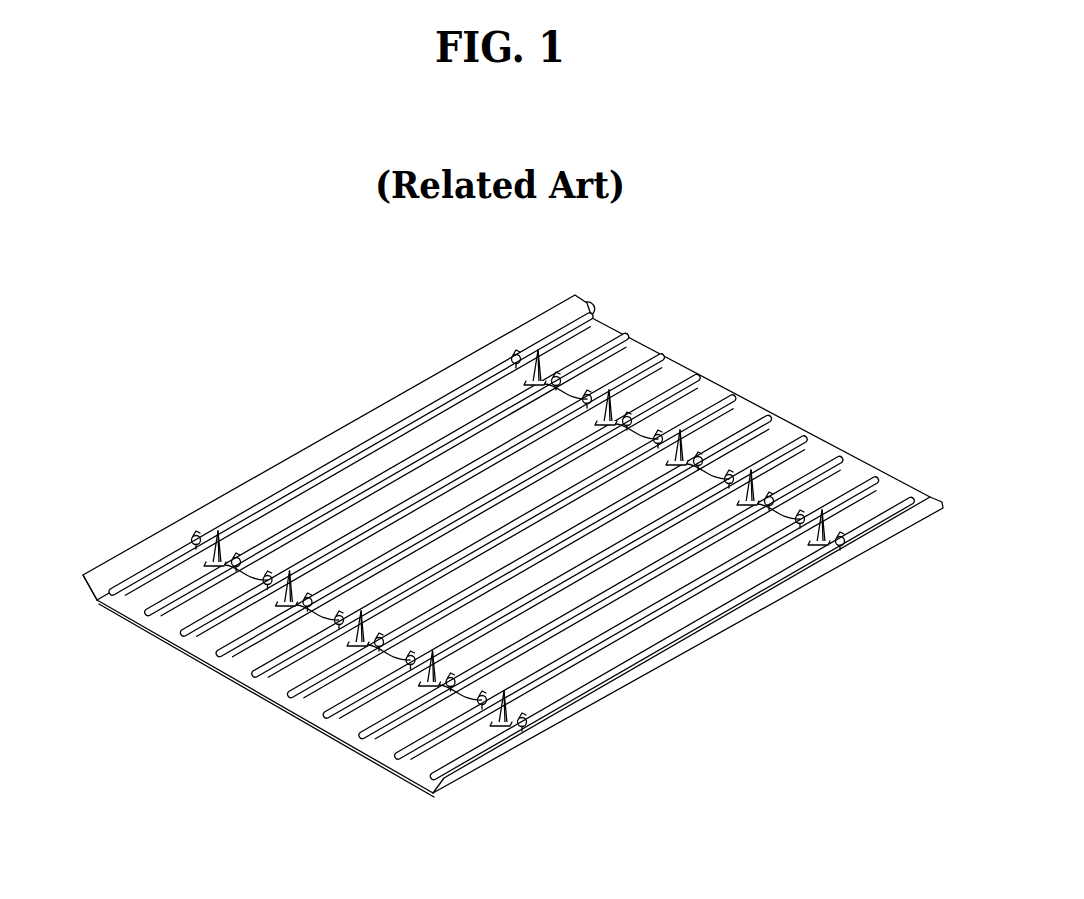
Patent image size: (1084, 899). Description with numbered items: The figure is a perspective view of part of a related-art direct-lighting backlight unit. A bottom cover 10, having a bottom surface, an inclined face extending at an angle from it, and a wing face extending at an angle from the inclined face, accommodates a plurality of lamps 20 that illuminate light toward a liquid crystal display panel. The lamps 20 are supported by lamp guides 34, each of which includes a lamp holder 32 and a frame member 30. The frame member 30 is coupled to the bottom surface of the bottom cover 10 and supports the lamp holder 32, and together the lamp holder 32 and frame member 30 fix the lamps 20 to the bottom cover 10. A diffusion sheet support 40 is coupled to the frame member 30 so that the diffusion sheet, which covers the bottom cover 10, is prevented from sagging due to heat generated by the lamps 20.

The bottom cover 10 is at (800, 577).
The lamp 20 is at (377, 760).
The frame member 30 is at (232, 566).
The lamp holder 32 is at (265, 580).
The lamp guide 34 is at (455, 551).
The diffusion sheet support 40 is at (420, 673).